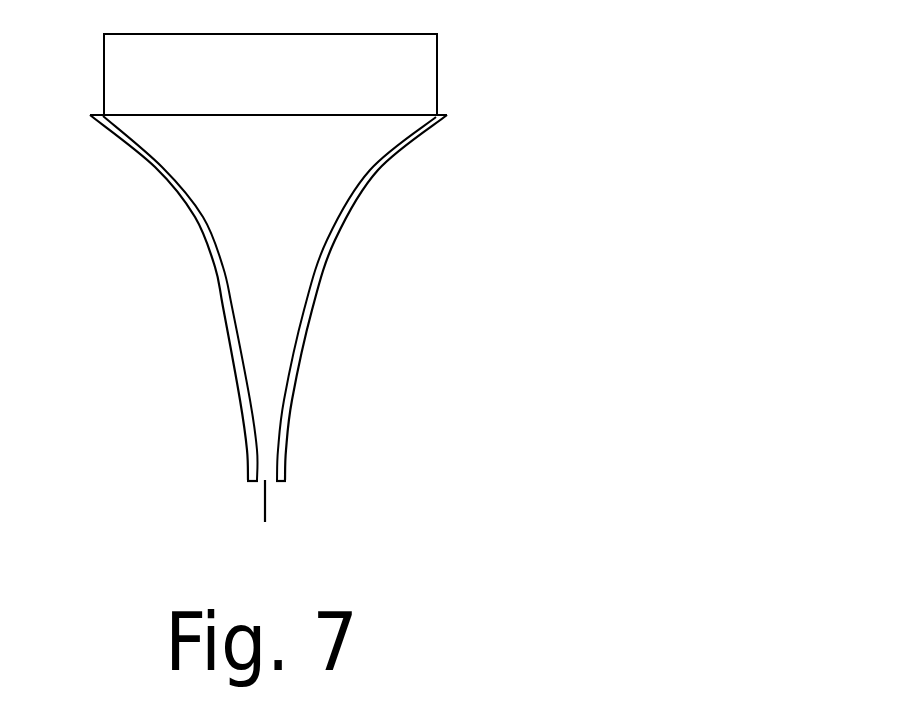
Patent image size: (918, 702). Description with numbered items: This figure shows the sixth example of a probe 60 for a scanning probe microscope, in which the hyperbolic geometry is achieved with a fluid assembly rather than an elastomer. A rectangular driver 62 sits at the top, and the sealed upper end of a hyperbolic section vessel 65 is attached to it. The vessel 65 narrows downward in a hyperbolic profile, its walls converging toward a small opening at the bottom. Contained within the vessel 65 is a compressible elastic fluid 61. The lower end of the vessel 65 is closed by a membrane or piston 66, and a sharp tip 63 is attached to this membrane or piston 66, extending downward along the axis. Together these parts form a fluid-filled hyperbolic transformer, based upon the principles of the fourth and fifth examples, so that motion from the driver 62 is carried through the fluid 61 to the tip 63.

The probe 60 is at (173, 303).
The driver 62 is at (435, 70).
The hyperbolic section vessel 65 is at (355, 203).
The compressible elastic fluid 61 is at (287, 287).
The membrane or piston 66 is at (268, 478).
The sharp tip 63 is at (277, 503).